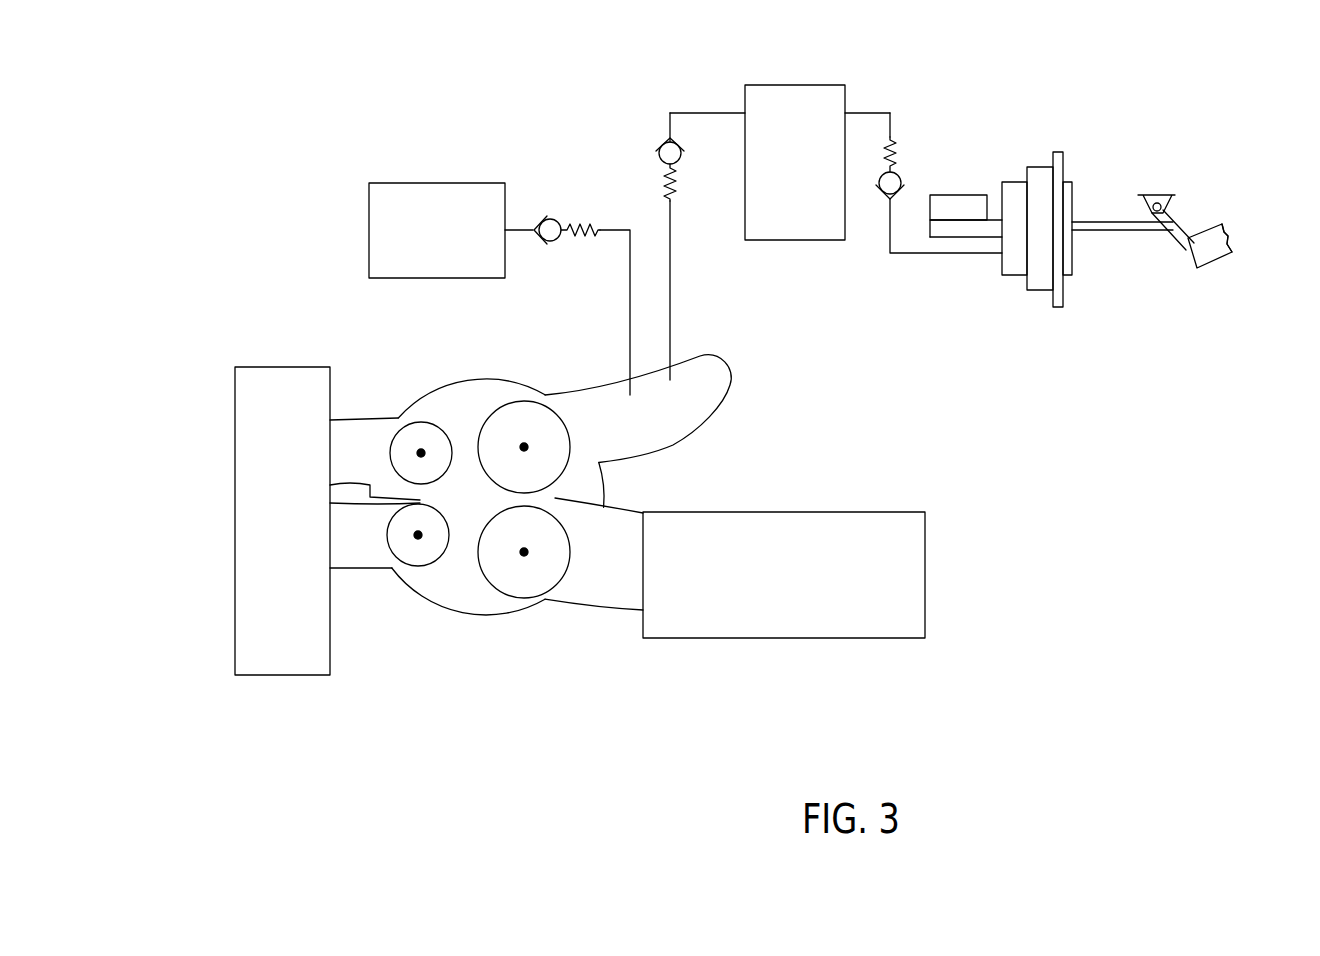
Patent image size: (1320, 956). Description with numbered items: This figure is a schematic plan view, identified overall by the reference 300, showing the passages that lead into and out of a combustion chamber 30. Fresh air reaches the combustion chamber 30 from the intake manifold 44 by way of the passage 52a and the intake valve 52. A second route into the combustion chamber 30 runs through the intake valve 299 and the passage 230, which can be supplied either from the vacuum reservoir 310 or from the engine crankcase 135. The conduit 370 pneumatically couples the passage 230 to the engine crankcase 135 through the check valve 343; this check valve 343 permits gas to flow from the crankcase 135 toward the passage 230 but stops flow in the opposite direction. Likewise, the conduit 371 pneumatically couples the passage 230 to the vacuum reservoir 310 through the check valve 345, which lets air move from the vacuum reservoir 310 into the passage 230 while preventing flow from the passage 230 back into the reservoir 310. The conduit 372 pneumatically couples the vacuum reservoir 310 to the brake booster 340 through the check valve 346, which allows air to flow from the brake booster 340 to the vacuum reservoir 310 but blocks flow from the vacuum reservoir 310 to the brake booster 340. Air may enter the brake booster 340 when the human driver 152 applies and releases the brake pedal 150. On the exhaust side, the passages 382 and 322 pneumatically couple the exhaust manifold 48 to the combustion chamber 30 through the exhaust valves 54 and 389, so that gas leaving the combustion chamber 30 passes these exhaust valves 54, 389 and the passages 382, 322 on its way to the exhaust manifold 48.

The brake system 300 is at (243, 68).
The engine crankcase 135 is at (437, 230).
The check valve 343 is at (558, 239).
The check valve 345 is at (661, 160).
The vacuum reservoir 310 is at (795, 162).
The check valve 346 is at (901, 189).
The conduit 372 is at (890, 117).
The conduit 371 is at (670, 277).
The conduit 370 is at (630, 345).
The brake booster 340 is at (1002, 273).
The brake pedal 150 is at (1182, 253).
The human driver 152 is at (1226, 224).
The exhaust manifold 48 is at (282, 521).
The passage 382 is at (360, 420).
The exhaust valve 389 is at (421, 453).
The intake valve 299 is at (524, 447).
The passage 322 is at (347, 570).
The exhaust valve 54 is at (418, 535).
The intake valve 52 is at (524, 552).
The combustion chamber 30 is at (453, 610).
The passage 52a is at (578, 602).
The intake manifold 44 is at (784, 575).
The passage 230 is at (700, 432).